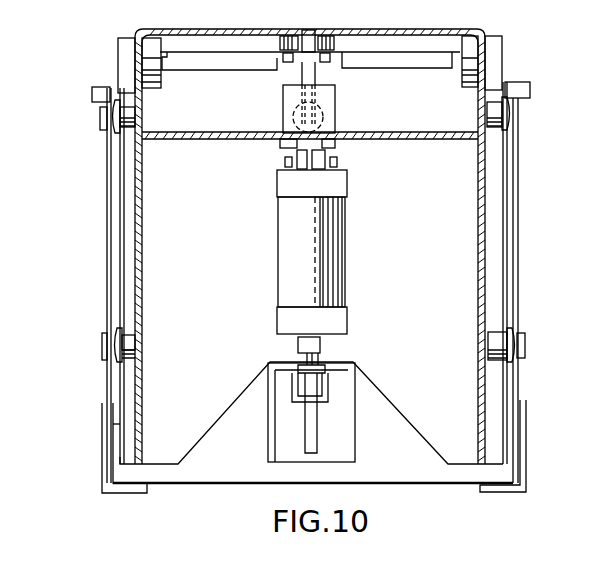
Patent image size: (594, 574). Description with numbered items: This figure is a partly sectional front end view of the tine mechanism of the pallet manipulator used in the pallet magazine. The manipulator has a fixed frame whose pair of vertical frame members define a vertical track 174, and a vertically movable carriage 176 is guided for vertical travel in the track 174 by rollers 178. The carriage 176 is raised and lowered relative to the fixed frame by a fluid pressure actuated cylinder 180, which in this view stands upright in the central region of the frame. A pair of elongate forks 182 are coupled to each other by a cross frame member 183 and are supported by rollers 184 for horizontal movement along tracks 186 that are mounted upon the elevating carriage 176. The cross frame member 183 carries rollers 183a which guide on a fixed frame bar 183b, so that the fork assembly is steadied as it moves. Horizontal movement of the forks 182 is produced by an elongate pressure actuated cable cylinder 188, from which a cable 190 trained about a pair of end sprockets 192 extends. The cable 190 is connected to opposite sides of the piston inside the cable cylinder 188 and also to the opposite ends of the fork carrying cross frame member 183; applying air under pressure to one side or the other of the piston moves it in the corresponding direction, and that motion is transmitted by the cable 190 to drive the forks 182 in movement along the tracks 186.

The vertical track 174 is at (130, 225).
The vertically movable carriage 176 is at (213, 140).
The rollers 178 is at (127, 130).
The fluid pressure actuated cylinder 180 is at (327, 250).
The elongate forks 182 is at (250, 62).
The cross frame member 183 is at (215, 52).
The rollers 183a is at (280, 37).
The fixed frame bar 183b is at (310, 35).
The rollers 184 is at (147, 60).
The tracks 186 is at (155, 82).
The pressure actuated cable cylinder 188 is at (330, 118).
The cable 190 is at (290, 100).
The end sprockets 192 is at (318, 80).